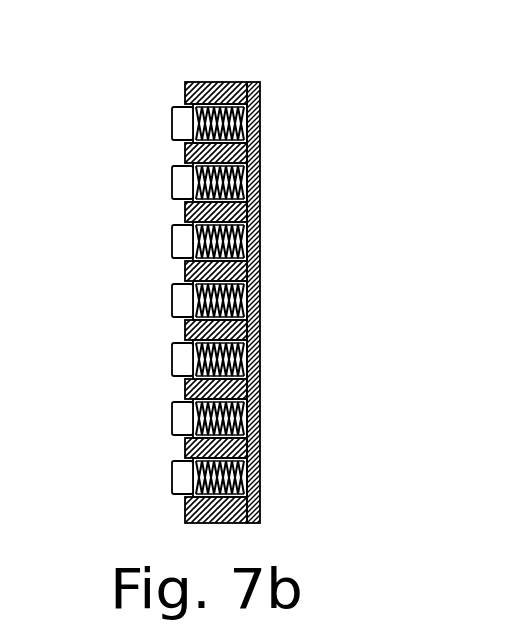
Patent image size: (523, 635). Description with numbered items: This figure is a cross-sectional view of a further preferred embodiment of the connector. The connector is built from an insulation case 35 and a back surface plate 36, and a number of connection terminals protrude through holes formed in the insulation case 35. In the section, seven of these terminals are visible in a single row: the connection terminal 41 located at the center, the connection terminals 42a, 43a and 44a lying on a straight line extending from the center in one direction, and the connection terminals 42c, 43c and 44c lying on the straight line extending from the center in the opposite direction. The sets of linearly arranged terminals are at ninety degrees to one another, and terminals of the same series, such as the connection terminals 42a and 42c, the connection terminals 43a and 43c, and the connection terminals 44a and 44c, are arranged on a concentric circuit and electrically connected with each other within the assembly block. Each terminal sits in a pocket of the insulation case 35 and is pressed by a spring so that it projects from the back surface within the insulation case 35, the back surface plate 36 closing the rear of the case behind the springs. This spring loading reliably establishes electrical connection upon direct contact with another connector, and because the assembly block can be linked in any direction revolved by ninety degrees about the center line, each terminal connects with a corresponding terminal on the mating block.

The insulation case 35 is at (220, 81).
The back surface plate 36 is at (260, 115).
The connection terminal 41 is at (172, 307).
The connection terminal 42a is at (172, 248).
The connection terminal 42c is at (172, 363).
The connection terminal 43a is at (172, 190).
The connection terminal 43c is at (172, 421).
The connection terminal 44a is at (172, 128).
The connection terminal 44c is at (172, 490).